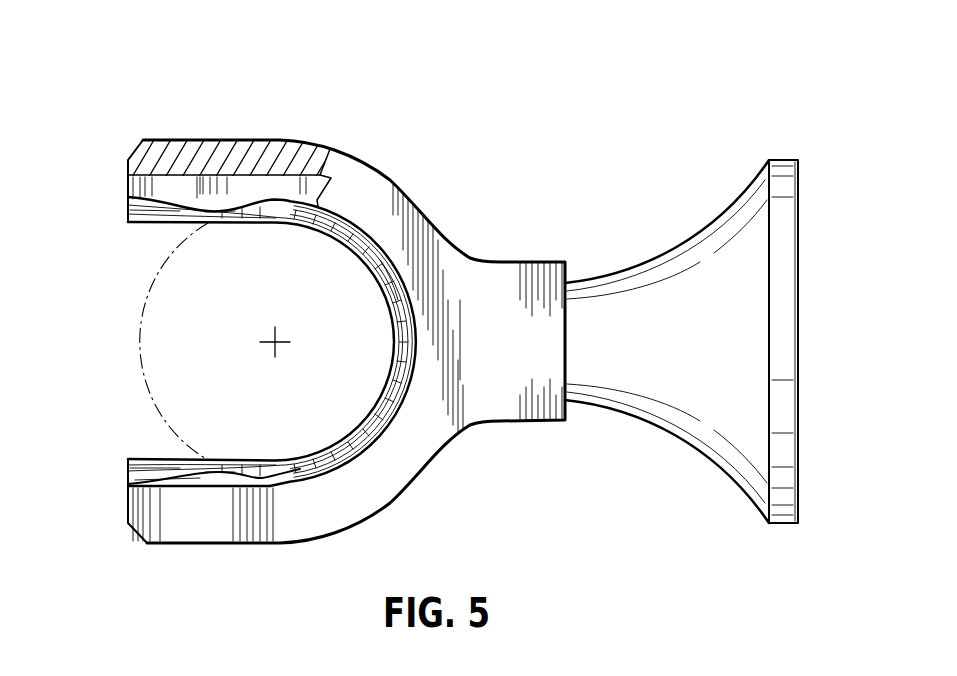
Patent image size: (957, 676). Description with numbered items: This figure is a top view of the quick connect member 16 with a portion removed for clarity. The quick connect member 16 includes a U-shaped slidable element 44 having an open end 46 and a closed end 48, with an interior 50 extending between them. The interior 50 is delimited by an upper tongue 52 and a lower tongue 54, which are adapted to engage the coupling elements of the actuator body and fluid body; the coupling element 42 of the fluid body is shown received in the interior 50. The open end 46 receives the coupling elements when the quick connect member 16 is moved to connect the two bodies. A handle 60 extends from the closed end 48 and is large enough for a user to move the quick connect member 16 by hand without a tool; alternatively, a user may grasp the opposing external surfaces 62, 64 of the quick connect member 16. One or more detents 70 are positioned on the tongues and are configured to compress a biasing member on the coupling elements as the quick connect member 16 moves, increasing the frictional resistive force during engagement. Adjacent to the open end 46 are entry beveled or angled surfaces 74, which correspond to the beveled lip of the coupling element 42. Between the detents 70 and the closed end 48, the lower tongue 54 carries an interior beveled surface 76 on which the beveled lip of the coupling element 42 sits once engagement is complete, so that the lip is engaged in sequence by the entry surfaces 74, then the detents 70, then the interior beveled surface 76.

The quick connect member 16 is at (563, 159).
The coupling element 42 is at (140, 322).
The slidable element 44 is at (374, 168).
The open end 46 is at (127, 378).
The closed end 48 is at (452, 276).
The interior 50 is at (250, 342).
The upper tongue 52 is at (167, 488).
The lower tongue 54 is at (136, 190).
The handle 60 is at (786, 312).
The external surface 62 is at (240, 545).
The external surface 64 is at (243, 148).
The detent 70 is at (225, 218).
The entry beveled or angled surface 74 is at (143, 216).
The interior beveled surface 76 is at (386, 279).